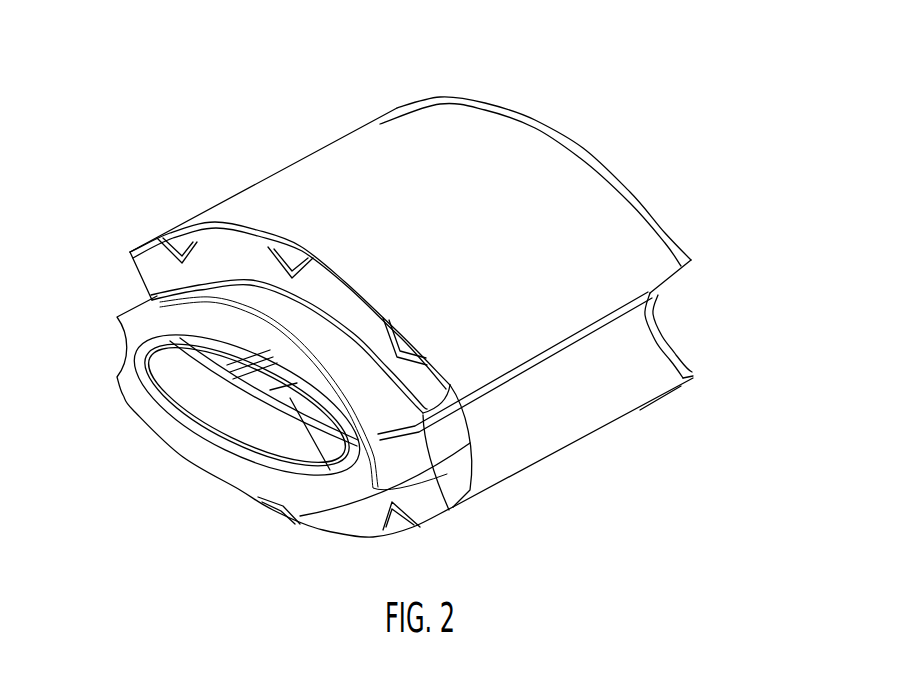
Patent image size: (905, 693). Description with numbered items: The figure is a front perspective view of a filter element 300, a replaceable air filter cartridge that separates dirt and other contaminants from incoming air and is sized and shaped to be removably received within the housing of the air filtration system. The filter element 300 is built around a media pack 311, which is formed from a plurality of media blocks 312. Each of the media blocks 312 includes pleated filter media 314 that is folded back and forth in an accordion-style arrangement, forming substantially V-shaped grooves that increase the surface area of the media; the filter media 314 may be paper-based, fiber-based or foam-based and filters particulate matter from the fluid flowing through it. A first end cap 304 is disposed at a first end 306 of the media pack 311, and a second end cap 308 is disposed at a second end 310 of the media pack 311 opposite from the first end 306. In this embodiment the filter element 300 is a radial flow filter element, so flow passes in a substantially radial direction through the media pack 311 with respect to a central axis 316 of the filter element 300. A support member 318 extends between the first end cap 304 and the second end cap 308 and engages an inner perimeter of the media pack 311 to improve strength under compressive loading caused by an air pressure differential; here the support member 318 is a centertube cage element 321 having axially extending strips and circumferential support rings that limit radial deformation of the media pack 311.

The filter element 300 is at (206, 157).
The first end cap 304 is at (439, 402).
The first end 306 is at (266, 540).
The second end cap 308 is at (682, 376).
The second end 310 is at (732, 303).
The media pack 311 is at (444, 125).
The media blocks 312 is at (320, 183).
The filter media 314 is at (593, 350).
The central axis 316 is at (292, 392).
The support member 318 is at (293, 381).
The centertube cage element 321 is at (243, 372).